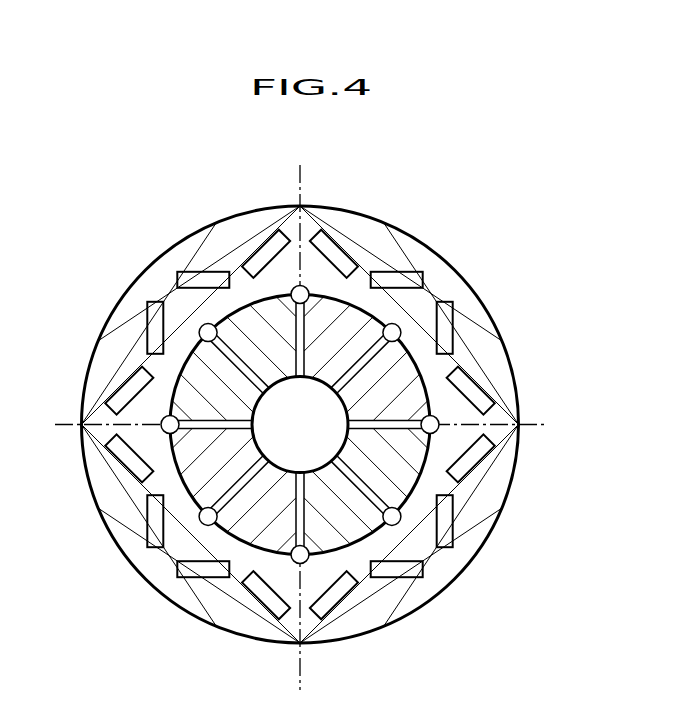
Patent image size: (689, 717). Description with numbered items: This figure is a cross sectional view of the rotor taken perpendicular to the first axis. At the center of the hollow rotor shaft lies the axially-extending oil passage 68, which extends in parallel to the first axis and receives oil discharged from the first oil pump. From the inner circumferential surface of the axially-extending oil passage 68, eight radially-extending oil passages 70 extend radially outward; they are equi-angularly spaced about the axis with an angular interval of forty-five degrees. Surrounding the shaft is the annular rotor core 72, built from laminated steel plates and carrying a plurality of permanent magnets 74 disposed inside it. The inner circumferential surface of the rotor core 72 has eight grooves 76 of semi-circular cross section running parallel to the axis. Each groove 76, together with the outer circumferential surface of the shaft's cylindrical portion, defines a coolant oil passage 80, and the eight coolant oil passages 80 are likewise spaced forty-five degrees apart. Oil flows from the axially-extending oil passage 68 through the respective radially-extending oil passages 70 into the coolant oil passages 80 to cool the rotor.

The rotor core 72 is at (503, 283).
The permanent magnets 74 is at (147, 328).
The coolant oil passages 80 is at (190, 318).
The grooves 76 is at (295, 293).
The radially-extending oil passages 70 is at (305, 356).
The axially-extending oil passage 68 is at (345, 438).